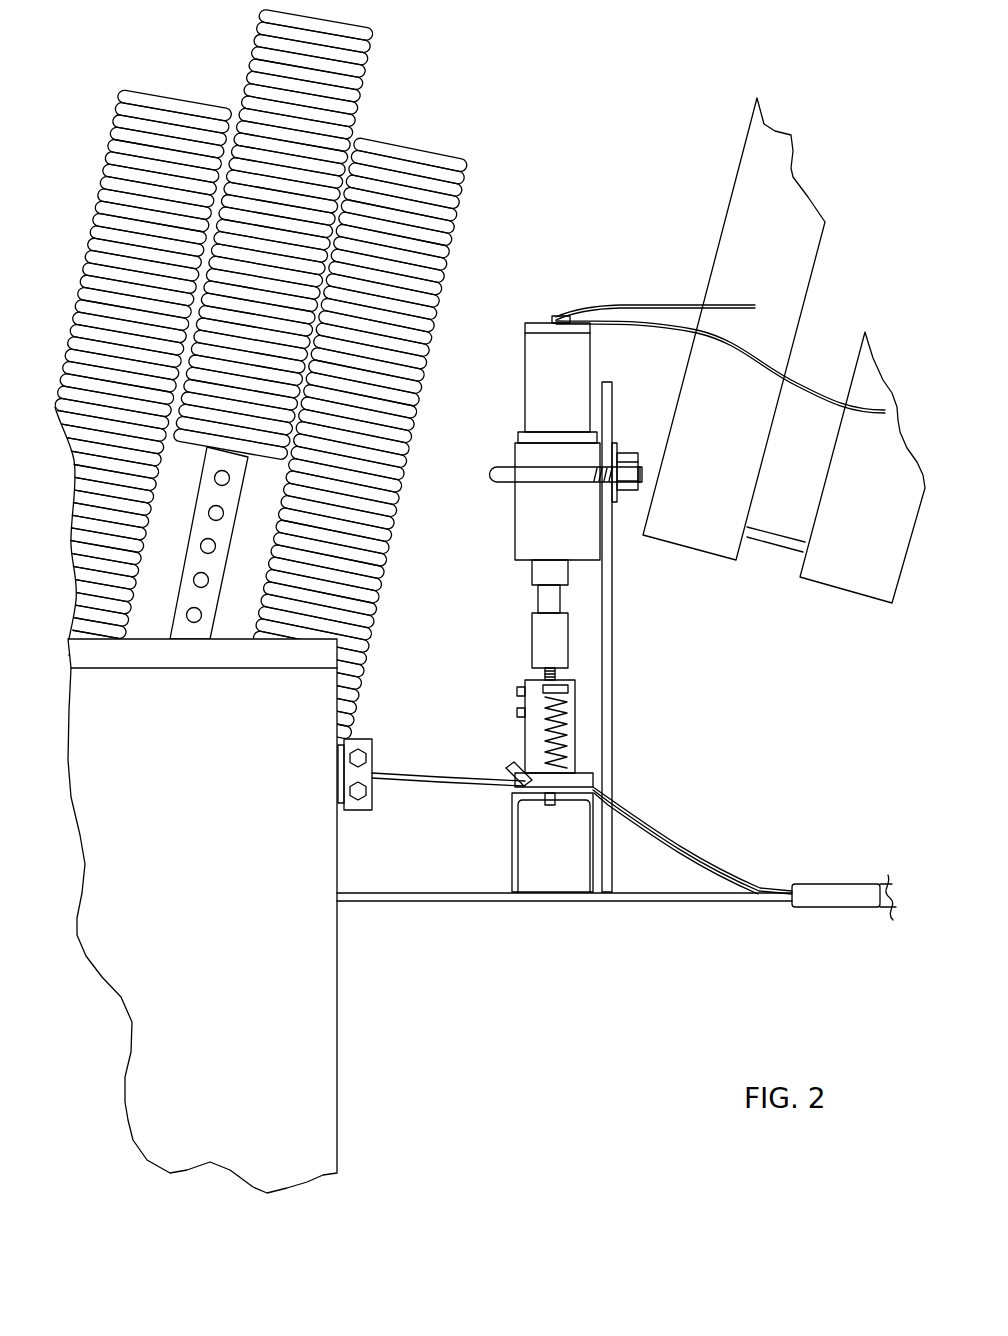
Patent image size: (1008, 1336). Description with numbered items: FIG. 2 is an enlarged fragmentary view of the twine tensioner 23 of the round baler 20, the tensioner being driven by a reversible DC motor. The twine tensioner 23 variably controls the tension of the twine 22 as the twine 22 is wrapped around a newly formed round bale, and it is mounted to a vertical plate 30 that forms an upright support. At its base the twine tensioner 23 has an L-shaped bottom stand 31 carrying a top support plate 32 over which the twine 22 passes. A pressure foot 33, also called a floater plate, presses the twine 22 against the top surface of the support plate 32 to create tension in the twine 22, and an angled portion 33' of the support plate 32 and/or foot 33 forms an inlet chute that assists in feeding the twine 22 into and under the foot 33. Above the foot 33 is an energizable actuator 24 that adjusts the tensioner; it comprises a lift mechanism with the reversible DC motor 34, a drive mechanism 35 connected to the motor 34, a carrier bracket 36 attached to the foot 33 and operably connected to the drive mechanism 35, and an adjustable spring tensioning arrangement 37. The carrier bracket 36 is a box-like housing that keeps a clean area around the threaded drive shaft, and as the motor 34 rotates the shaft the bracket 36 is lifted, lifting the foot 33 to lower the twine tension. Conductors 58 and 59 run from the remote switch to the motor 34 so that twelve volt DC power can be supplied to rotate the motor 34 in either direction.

The baler 20 is at (490, 92).
The twine 22 is at (692, 838).
The twine tensioner 23 is at (597, 272).
The energizable actuator 24 is at (525, 352).
The vertical plate 30 is at (613, 748).
The L-shaped bottom stand 31 is at (523, 868).
The top support plate 32 is at (482, 784).
The pressure foot 33 is at (599, 780).
The angled portion 33' is at (482, 759).
The reversible DC motor 34 is at (566, 392).
The drive mechanism 35 is at (512, 626).
The carrier bracket 36 is at (524, 740).
The adjustable spring tensioning arrangement 37 is at (566, 735).
The motor conductor 58 is at (745, 306).
The motor conductor 59 is at (798, 384).